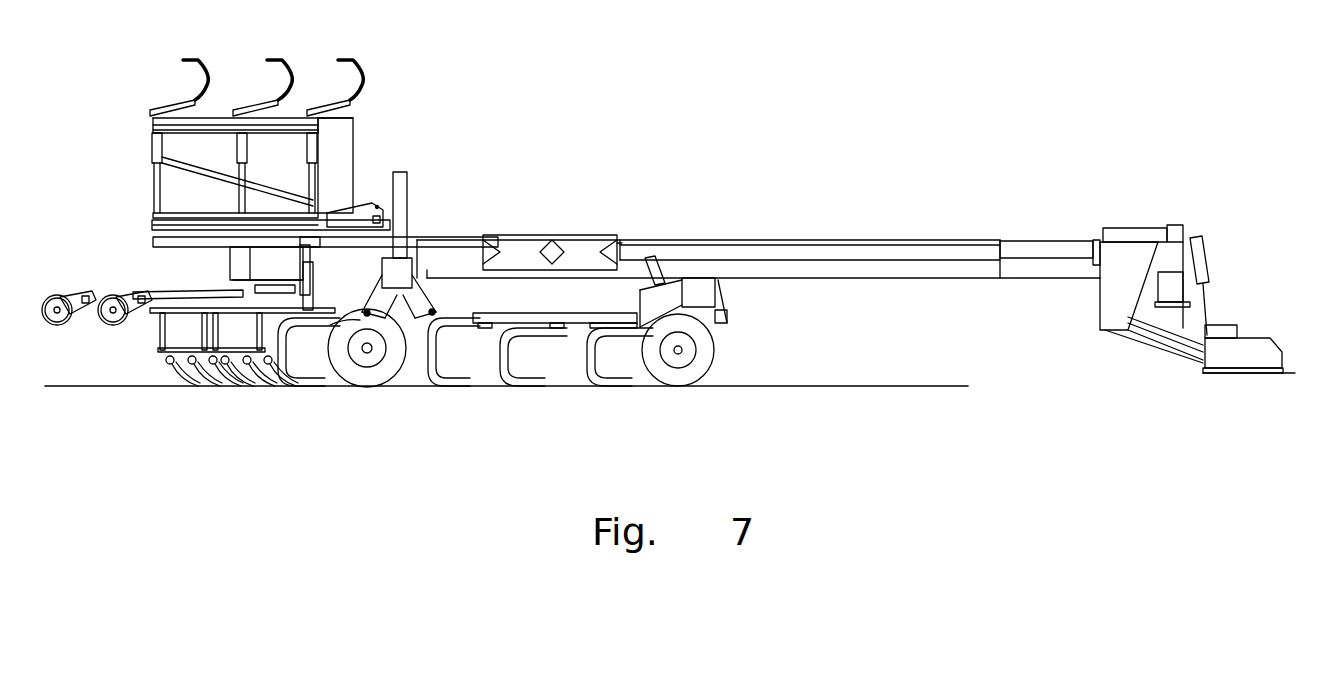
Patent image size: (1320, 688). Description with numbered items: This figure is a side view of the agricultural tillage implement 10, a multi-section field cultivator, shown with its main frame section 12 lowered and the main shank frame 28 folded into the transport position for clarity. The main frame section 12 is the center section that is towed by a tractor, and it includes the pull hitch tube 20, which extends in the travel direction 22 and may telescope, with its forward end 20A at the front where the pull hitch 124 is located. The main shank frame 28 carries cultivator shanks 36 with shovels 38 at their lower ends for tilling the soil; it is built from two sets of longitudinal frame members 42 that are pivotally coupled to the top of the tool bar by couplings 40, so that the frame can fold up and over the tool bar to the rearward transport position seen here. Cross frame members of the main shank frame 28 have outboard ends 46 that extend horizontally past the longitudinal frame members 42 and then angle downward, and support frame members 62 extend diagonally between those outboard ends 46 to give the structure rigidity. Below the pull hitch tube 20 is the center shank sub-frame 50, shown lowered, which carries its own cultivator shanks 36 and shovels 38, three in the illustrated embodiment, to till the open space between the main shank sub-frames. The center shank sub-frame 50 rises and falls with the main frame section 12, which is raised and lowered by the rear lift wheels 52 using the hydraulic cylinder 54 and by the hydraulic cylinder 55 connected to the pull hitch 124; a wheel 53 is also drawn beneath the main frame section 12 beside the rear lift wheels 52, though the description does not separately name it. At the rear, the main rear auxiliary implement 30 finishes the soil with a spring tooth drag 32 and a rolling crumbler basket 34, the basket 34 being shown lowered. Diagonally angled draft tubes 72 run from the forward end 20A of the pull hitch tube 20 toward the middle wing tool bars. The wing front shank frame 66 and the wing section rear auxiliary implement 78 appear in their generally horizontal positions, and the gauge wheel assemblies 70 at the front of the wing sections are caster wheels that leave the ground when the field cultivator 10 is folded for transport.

The agricultural tillage implement 10 is at (822, 149).
The main frame section 12 is at (703, 240).
The pull hitch tube 20 is at (853, 280).
The forward end of pull hitch tube 20A is at (1048, 240).
The travel direction 22 is at (1062, 308).
The main shank frame 28 is at (372, 116).
The main rear auxiliary implement 30 is at (72, 342).
The spring tooth drag 32 is at (247, 386).
The rolling basket 34 is at (115, 296).
The cultivator shanks 36 is at (587, 360).
The shovels 38 is at (528, 387).
The couplings 40 is at (367, 205).
The longitudinal frame members 42 is at (190, 232).
The outboard ends 46 is at (153, 183).
The center shank sub-frame 50 is at (583, 296).
The rear lift wheels 52 is at (307, 383).
The rear wheel 53 is at (372, 362).
The hydraulic cylinder 54 is at (410, 205).
The hydraulic cylinder 55 is at (1203, 253).
The support frame members 62 is at (217, 177).
The wing front shank frame 66 is at (600, 326).
The gauge wheel assemblies 70 is at (712, 350).
The diagonally angled draft tubes 72 is at (938, 250).
The wing section rear auxiliary implement 78 is at (129, 342).
The pull hitch 124 is at (1238, 360).